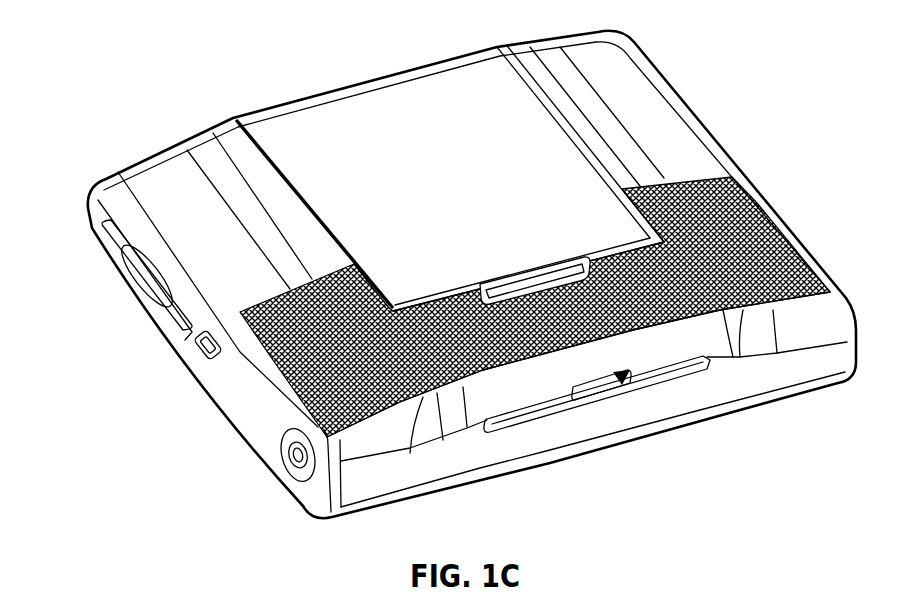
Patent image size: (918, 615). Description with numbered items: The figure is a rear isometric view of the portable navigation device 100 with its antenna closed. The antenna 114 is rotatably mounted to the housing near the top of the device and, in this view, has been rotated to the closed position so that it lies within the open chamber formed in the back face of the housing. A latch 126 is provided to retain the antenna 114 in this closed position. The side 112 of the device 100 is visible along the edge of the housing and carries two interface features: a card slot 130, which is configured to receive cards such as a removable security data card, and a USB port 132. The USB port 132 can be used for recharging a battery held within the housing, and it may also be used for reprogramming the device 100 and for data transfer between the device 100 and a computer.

The portable navigation device 100 is at (140, 52).
The side 112 is at (249, 415).
The antenna 114 is at (407, 100).
The latch 126 is at (523, 283).
The card slot 130 is at (110, 243).
The USB port 132 is at (197, 347).